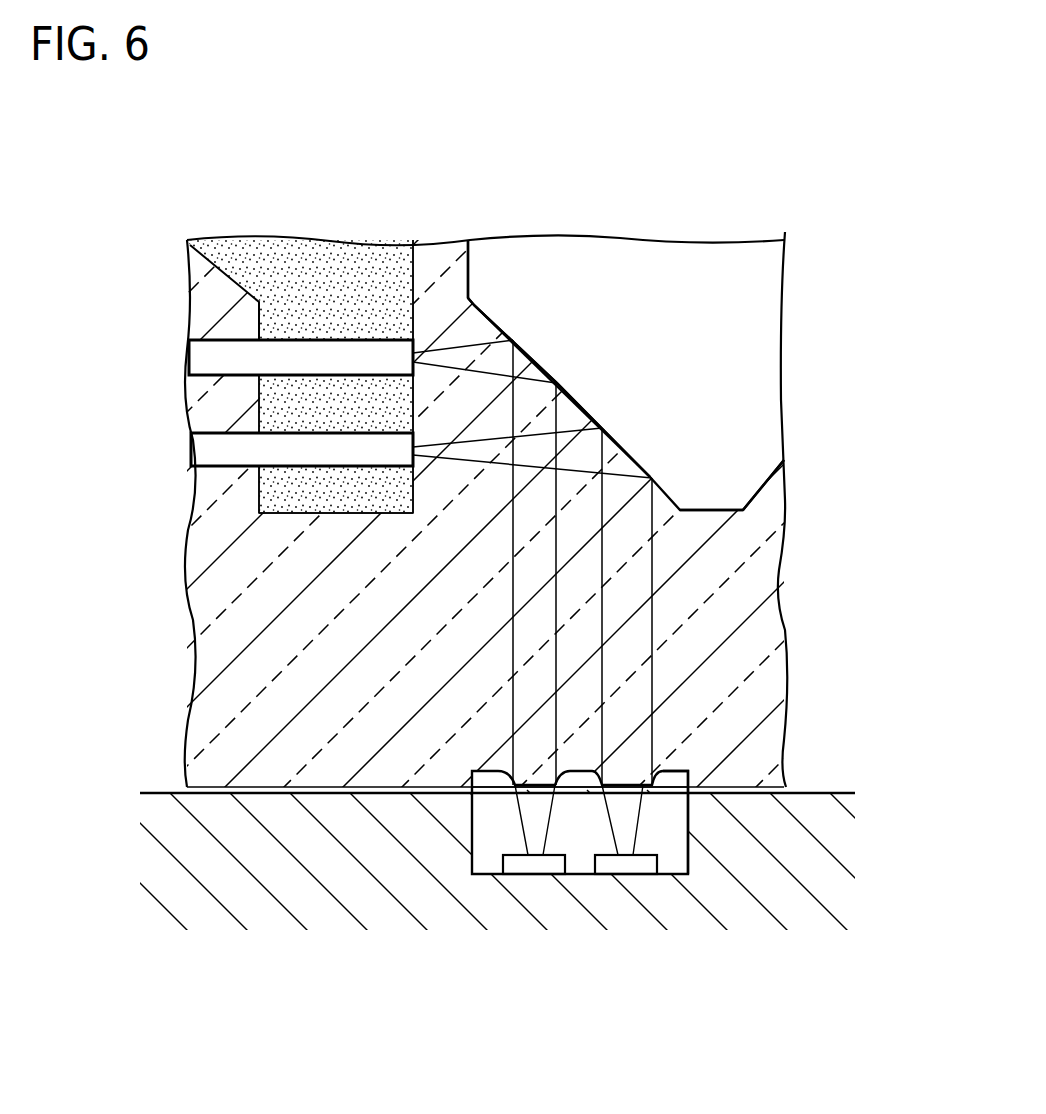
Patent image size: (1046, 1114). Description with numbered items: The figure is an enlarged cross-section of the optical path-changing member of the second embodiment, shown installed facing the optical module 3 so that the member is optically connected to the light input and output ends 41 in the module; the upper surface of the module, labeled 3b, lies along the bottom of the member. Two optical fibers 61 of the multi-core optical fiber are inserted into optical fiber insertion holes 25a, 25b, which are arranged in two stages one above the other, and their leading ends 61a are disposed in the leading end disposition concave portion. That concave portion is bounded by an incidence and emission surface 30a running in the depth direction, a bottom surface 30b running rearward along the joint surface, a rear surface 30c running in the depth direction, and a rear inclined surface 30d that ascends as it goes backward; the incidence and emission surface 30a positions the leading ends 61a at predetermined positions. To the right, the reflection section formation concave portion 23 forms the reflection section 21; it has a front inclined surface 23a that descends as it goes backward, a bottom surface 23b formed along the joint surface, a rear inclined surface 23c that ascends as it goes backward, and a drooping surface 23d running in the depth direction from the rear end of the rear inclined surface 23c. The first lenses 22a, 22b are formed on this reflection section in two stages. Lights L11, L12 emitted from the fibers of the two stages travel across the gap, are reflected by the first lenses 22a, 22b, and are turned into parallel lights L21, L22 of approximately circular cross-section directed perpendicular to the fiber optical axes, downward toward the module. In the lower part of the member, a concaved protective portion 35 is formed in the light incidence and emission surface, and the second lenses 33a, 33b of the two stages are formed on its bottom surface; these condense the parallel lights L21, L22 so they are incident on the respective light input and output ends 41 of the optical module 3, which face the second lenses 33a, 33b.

The optical module 3 is at (845, 790).
The upper surface of base 3b is at (807, 793).
The reflection section 21 is at (550, 372).
The first lens 22a is at (547, 366).
The first lens 22b is at (623, 447).
The reflection section formation concave portion 23 is at (728, 258).
The front inclined surface 23a is at (763, 477).
The bottom surface 23b is at (722, 510).
The rear inclined surface 23c is at (477, 308).
The drooping surface 23d is at (472, 258).
The optical fiber insertion hole 25a is at (223, 343).
The optical fiber insertion hole 25b is at (230, 465).
The incidence and emission surface 30a is at (330, 512).
The bottom surface 30b is at (318, 504).
The rear surface 30c is at (255, 411).
The rear inclined surface 30d is at (232, 270).
The second lens 33a is at (483, 780).
The second lens 33b is at (658, 782).
The concaved protective portion 35 is at (482, 788).
The light input and output end 41 is at (535, 866).
The optical fiber 61 is at (360, 433).
The leading end 61a is at (415, 368).
The light L11 is at (453, 347).
The light L12 is at (494, 463).
The parallel light L21 is at (513, 627).
The parallel light L22 is at (652, 590).